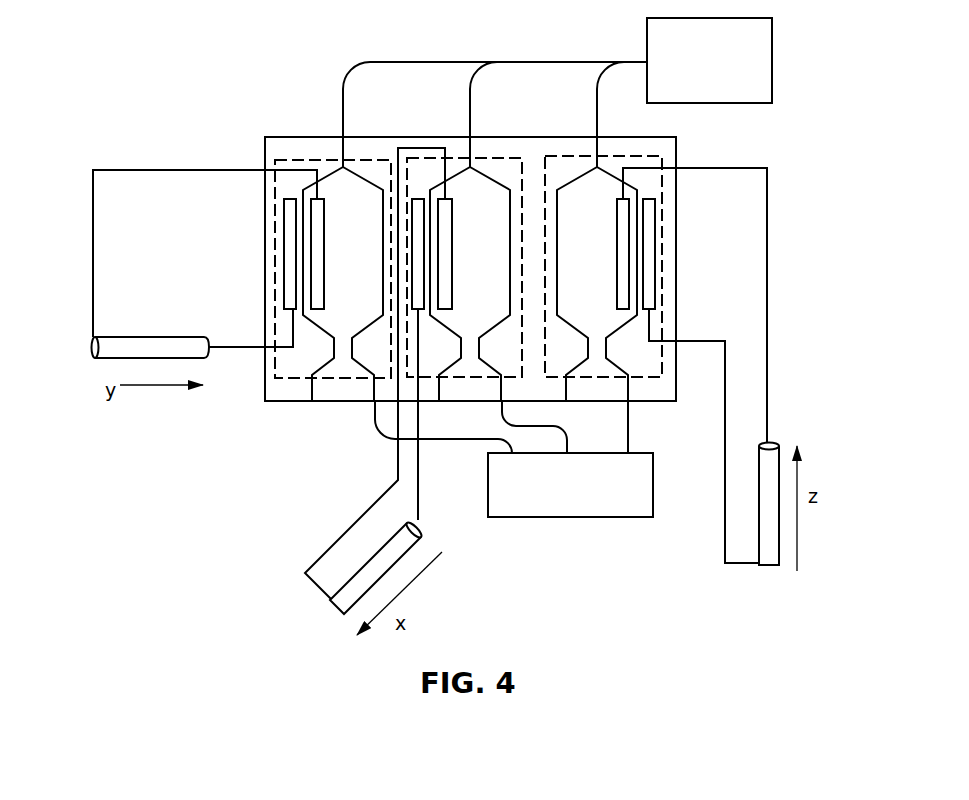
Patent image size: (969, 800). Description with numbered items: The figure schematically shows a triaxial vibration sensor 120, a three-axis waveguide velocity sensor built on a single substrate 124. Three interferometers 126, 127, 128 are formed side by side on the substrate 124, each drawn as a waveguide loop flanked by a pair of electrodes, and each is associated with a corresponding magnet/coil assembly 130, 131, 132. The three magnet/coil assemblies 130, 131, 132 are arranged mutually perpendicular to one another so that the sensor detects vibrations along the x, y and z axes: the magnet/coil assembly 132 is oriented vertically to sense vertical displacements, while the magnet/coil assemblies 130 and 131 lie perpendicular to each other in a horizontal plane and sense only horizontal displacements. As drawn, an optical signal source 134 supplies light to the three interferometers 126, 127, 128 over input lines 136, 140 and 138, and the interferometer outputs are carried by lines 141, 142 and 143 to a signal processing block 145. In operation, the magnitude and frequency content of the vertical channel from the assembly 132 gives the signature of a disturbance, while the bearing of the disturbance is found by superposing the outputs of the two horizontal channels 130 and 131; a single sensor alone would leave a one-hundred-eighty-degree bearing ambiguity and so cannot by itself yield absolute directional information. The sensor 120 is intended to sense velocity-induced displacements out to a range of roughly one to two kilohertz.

The triaxial vibration sensor 120 is at (158, 150).
The substrate 124 is at (305, 136).
The interferometer 126 is at (277, 215).
The interferometer 127 is at (502, 157).
The interferometer 128 is at (662, 185).
The magnet/coil assembly 130 is at (158, 337).
The magnet/coil assembly 131 is at (335, 605).
The magnet/coil assembly 132 is at (771, 549).
The optical signal source 134 is at (647, 40).
The first input optical fiber 136 is at (385, 62).
The third input optical fiber 138 is at (597, 105).
The second input optical fiber 140 is at (470, 92).
The first output line 141 is at (467, 440).
The second output line 142 is at (560, 433).
The third output line 143 is at (630, 422).
The signal processing unit 145 is at (563, 517).